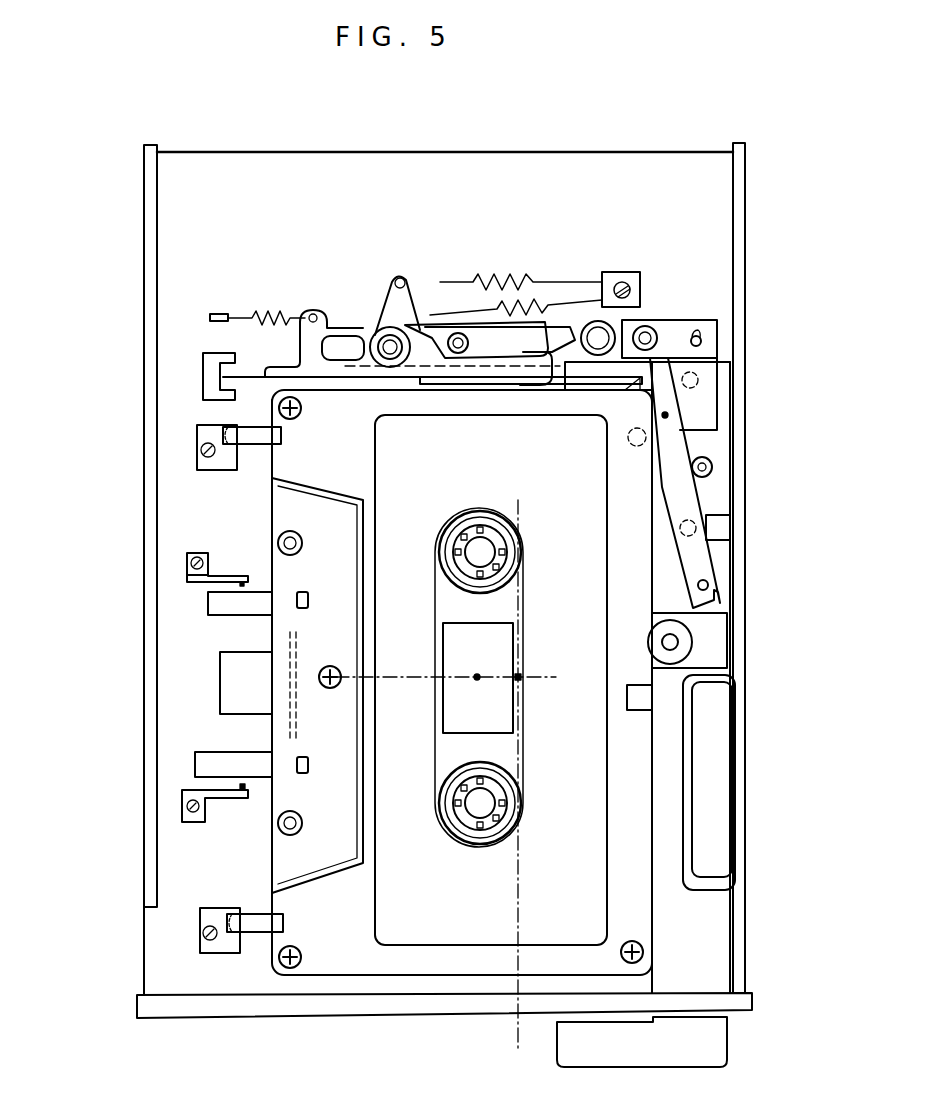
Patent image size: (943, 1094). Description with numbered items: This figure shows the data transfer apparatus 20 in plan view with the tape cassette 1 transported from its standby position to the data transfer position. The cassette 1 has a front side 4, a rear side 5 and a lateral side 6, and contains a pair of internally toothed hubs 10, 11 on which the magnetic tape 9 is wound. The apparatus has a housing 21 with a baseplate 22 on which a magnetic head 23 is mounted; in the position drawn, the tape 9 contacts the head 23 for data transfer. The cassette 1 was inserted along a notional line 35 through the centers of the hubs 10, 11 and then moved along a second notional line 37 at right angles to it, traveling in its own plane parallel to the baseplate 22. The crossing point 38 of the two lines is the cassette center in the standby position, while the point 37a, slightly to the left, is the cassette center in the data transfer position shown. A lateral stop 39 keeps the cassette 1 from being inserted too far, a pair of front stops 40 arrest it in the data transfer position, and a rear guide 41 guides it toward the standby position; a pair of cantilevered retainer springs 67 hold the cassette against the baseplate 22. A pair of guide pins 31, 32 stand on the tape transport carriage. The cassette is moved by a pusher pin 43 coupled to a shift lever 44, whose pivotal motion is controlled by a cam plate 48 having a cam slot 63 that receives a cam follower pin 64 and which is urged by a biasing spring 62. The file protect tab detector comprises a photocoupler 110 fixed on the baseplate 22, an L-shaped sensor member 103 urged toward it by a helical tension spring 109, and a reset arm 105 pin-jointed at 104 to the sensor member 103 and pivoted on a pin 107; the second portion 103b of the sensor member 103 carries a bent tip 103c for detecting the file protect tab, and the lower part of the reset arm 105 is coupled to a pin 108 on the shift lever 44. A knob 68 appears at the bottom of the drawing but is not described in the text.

The tape cassette 1 is at (660, 935).
The front side 4 is at (268, 858).
The rear side 5 is at (654, 903).
The lateral side 6 is at (660, 376).
The magnetic tape 9 is at (292, 665).
The hub 10 is at (505, 551).
The hub 11 is at (508, 800).
The data transfer apparatus 20 is at (656, 150).
The housing 21 is at (147, 515).
The baseplate 22 is at (513, 162).
The magnetic head 23 is at (220, 680).
The guide pin 31 is at (278, 541).
The guide pin 32 is at (278, 823).
The notional line 35 is at (515, 1022).
The notional line 37 is at (394, 677).
The point 37a is at (477, 677).
The crossing point 38 is at (521, 680).
The lateral stop 39 is at (567, 385).
The front stop 40 is at (208, 600).
The rear guide 41 is at (683, 724).
The pusher pin 43 is at (683, 642).
The shift lever 44 is at (706, 402).
The cam plate 48 is at (382, 325).
The biasing spring 62 is at (466, 278).
The cam slot 63 is at (404, 300).
The cam follower pin 64 is at (440, 330).
The retainer spring 67 is at (260, 452).
The knob 68 is at (728, 1036).
The sensor member 103 is at (512, 330).
The second portion 103b is at (655, 416).
The tip 103c is at (628, 437).
The pin 104 is at (660, 338).
The reset arm 105 is at (690, 486).
The pin 107 is at (705, 586).
The pin 108 is at (712, 526).
The helical tension spring 109 is at (258, 316).
The photocoupler 110 is at (203, 370).